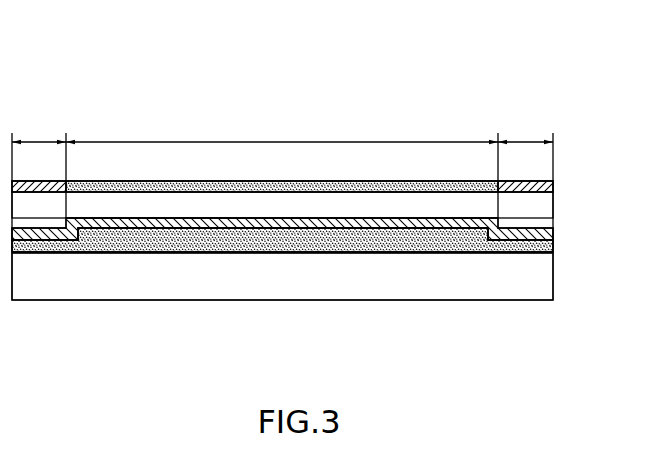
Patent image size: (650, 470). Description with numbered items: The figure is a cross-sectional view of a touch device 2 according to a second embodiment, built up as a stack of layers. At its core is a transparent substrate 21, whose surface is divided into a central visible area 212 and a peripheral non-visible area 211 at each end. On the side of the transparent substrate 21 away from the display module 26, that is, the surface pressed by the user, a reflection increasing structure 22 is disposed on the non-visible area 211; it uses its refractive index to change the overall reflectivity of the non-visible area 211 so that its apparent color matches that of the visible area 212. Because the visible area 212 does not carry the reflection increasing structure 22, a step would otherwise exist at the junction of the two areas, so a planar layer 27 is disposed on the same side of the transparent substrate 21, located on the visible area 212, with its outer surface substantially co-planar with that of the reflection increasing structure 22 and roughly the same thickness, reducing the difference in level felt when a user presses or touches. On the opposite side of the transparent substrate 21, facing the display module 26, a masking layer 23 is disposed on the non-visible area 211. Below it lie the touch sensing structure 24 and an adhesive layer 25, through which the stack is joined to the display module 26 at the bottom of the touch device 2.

The touch device 2 is at (112, 44).
The non-visible area 211 is at (282, 169).
The visible area 212 is at (282, 133).
The transparent substrate 21 is at (550, 205).
The reflection increasing structure 22 is at (550, 187).
The masking layer 23 is at (550, 223).
The touch sensing structure 24 is at (550, 235).
The adhesive layer 25 is at (550, 249).
The display module 26 is at (543, 278).
The planar layer 27 is at (412, 188).